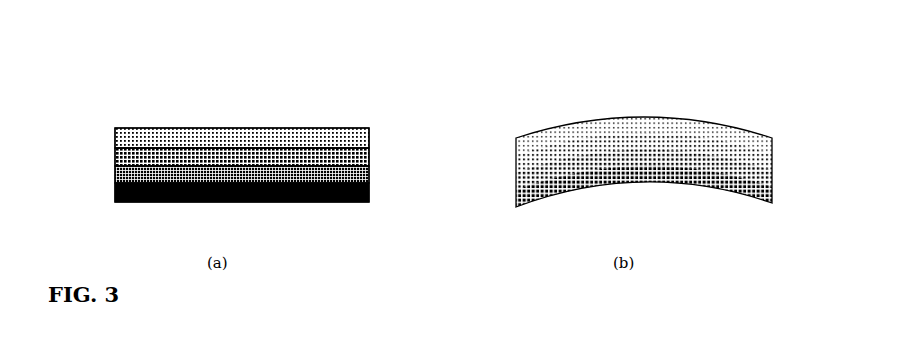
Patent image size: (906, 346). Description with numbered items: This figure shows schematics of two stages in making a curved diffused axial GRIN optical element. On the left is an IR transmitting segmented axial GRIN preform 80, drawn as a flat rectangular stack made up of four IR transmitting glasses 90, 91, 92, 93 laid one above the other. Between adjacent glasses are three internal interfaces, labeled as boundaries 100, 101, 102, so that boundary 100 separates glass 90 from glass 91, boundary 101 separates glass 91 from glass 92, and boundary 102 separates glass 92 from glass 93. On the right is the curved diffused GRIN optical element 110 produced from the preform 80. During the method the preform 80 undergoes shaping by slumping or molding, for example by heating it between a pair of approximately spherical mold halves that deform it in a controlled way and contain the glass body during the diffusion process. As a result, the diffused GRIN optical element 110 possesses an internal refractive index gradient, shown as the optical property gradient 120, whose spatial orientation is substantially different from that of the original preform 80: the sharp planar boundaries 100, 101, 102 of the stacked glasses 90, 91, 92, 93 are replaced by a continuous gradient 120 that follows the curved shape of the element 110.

The preform 80 is at (245, 154).
The glass 90 is at (128, 137).
The glass 91 is at (113, 158).
The glass 92 is at (115, 172).
The glass 93 is at (115, 197).
The boundary 100 is at (372, 148).
The boundary 101 is at (373, 168).
The boundary 102 is at (372, 184).
The diffused GRIN optical element 110 is at (649, 144).
The optical property gradient 120 is at (735, 167).